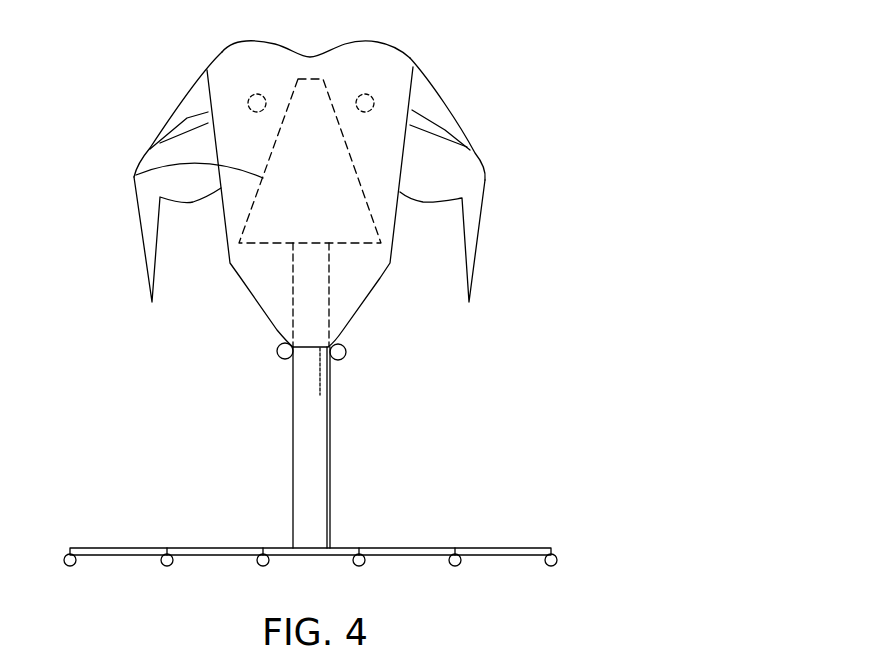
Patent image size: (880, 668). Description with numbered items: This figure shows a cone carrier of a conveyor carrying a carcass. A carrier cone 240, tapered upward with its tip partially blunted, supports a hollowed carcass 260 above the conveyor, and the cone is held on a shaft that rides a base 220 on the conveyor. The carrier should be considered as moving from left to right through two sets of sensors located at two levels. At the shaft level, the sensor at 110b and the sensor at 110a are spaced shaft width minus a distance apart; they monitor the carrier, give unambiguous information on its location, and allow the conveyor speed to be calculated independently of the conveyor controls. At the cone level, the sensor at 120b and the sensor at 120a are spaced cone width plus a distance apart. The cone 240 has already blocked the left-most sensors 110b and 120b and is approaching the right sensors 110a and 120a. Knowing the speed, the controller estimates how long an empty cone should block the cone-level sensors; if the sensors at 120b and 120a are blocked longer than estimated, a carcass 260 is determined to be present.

The Sensor 10 110a is at (345, 352).
The Sensor 9 110b is at (278, 355).
The Sensor 8 120a is at (370, 95).
The Sensor 7 120b is at (257, 93).
The base 220 is at (395, 548).
The carrier cone 240 is at (140, 171).
The carcass 260 is at (477, 153).